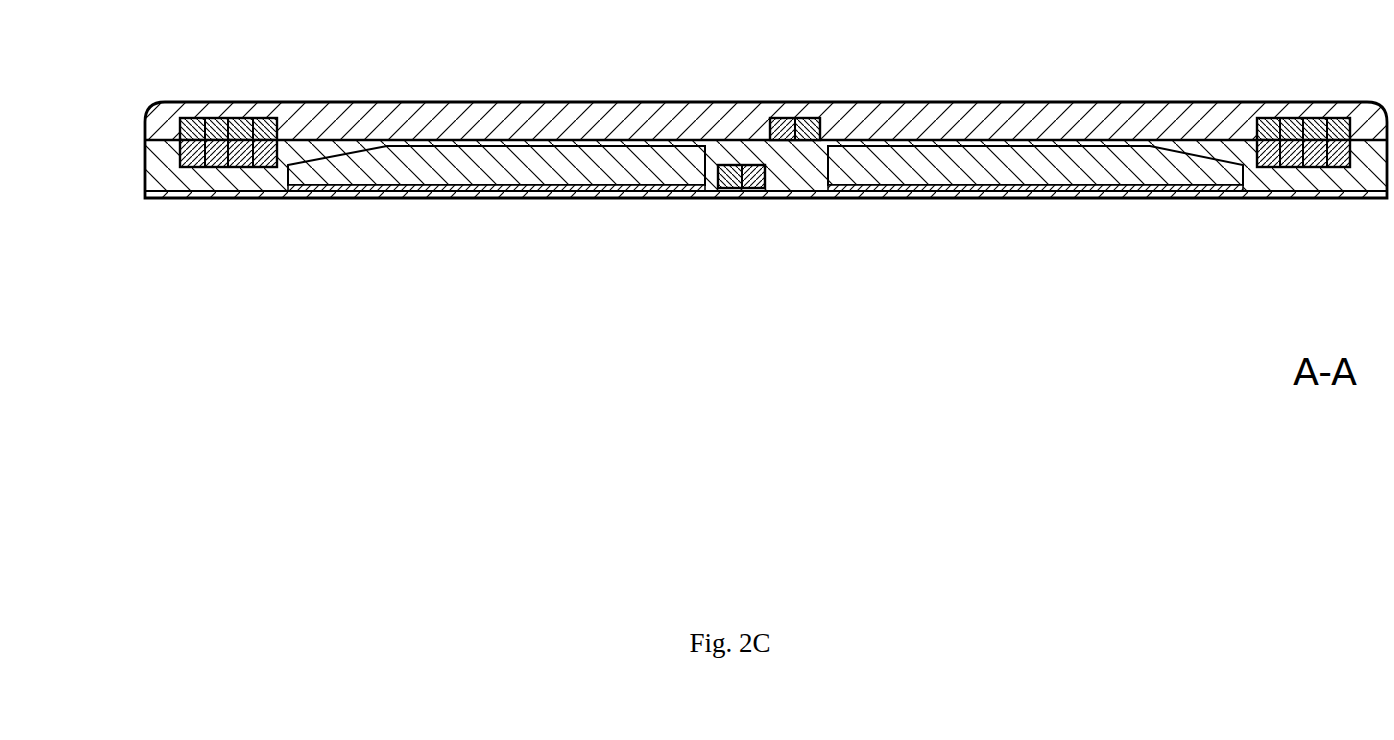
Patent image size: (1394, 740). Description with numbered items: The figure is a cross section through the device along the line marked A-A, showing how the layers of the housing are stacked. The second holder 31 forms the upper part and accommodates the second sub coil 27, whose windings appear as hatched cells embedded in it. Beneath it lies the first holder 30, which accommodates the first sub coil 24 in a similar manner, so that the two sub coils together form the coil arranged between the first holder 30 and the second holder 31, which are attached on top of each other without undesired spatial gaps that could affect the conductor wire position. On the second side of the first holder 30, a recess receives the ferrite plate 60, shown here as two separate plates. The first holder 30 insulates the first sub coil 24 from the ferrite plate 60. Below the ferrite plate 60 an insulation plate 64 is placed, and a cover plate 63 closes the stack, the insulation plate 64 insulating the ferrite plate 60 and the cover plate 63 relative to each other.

The second holder 31 is at (167, 118).
The first holder 30 is at (172, 168).
The second sub coil 27 is at (265, 128).
The first sub coil 24 is at (265, 155).
The ferrite plate 60 is at (503, 165).
The cover plate 63 is at (615, 189).
The insulation plate 64 is at (430, 193).